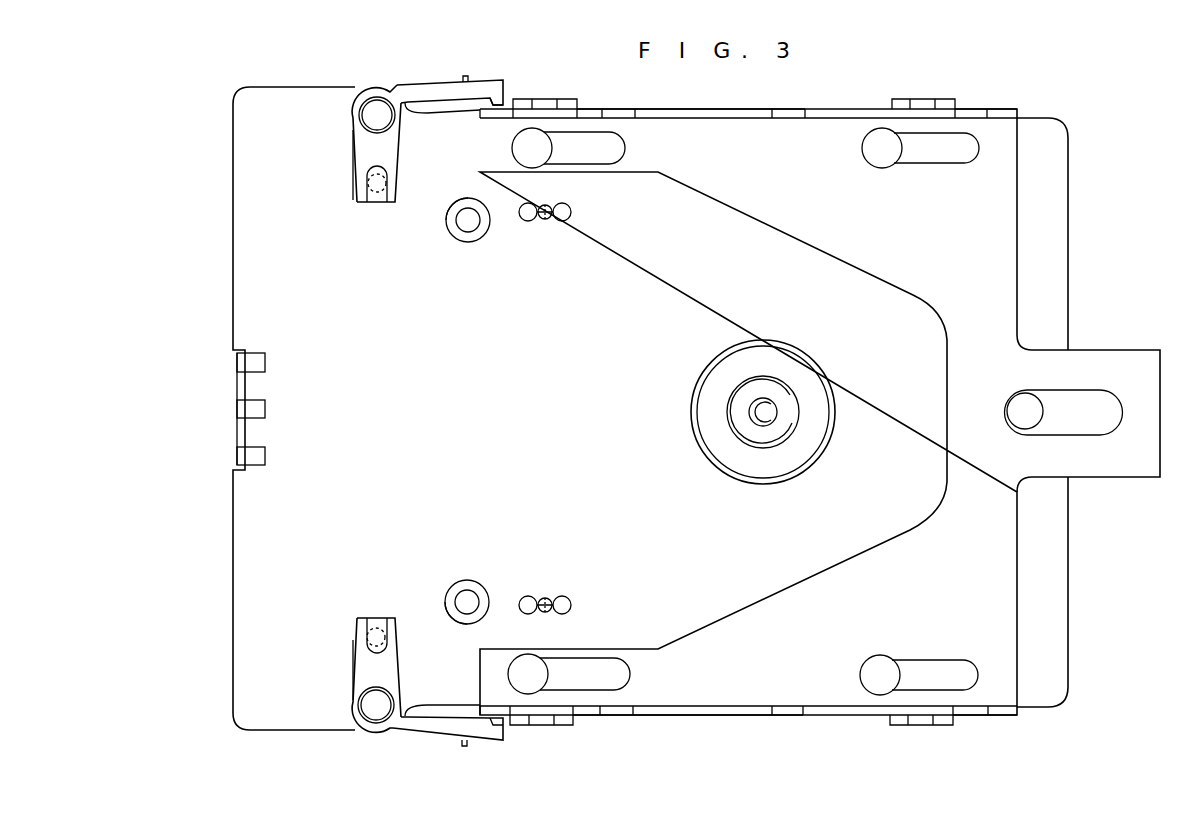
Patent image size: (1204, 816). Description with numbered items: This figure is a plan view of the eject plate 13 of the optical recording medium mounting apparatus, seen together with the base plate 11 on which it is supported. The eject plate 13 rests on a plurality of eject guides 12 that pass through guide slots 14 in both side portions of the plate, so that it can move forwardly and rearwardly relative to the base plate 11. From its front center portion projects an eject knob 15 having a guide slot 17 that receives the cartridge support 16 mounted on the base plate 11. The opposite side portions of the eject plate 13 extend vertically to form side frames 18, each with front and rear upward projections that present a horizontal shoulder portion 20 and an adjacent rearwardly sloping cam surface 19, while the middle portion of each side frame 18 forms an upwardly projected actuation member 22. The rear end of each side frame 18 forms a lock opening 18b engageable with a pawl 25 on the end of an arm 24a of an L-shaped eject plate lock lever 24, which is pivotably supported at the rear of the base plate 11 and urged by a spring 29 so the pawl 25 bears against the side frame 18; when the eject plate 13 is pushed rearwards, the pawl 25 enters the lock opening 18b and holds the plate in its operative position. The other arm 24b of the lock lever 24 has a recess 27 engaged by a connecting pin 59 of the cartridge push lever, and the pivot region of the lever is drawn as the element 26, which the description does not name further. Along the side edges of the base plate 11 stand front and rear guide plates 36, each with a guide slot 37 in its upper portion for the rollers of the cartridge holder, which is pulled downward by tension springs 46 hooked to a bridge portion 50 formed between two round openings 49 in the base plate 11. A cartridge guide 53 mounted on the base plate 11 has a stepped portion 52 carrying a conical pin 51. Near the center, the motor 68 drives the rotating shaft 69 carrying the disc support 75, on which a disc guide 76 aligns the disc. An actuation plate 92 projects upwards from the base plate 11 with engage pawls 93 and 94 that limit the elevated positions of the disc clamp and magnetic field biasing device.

The base plate 11 is at (235, 610).
The eject guide 12 is at (877, 135).
The eject plate 13 is at (1017, 308).
The guide slot 14 is at (938, 160).
The eject knob 15 is at (1161, 408).
The cartridge support 16 is at (1024, 408).
The guide slot 17 is at (1097, 390).
The side frame 18 is at (692, 108).
The lock opening 18b is at (575, 118).
The cam surface 19 is at (597, 108).
The horizontal shoulder portion 20 is at (622, 108).
The actuation member 22 is at (789, 108).
The eject plate lock lever 24 is at (397, 92).
The arm 24a is at (487, 80).
The arm 24b is at (357, 153).
The pawl 25 is at (500, 103).
The pivot hole 26 is at (375, 105).
The recess 27 is at (365, 200).
The spring 29 is at (466, 74).
The guide plate 36 is at (565, 99).
The guide slot 37 is at (543, 99).
The tension spring 46 is at (545, 219).
The round opening 49 is at (525, 221).
The bridge portion 50 is at (548, 208).
The conical pin 51 is at (472, 226).
The stepped portion 52 is at (462, 238).
The cartridge guide 53 is at (448, 226).
The connecting pin 59 is at (380, 195).
The motor 68 is at (735, 474).
The rotating shaft 69 is at (768, 412).
The disc support 75 is at (802, 368).
The disc guide 76 is at (743, 397).
The actuation plate 92 is at (237, 390).
The engage pawl 93 is at (265, 360).
The engage pawl 94 is at (265, 409).